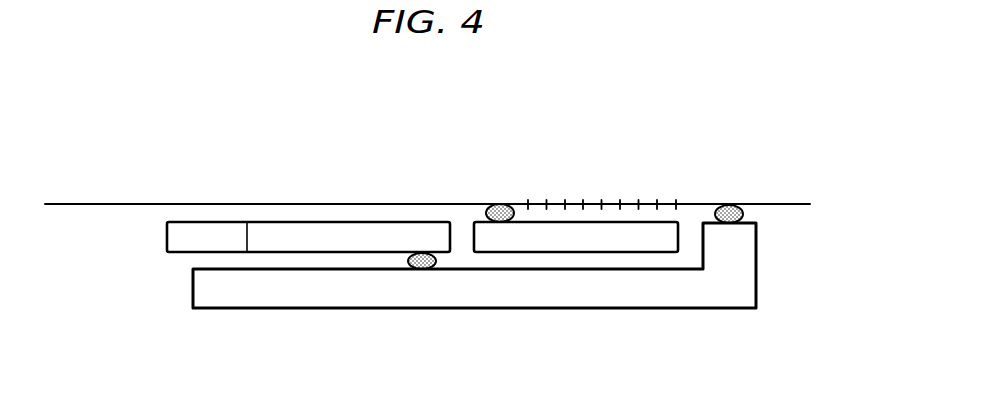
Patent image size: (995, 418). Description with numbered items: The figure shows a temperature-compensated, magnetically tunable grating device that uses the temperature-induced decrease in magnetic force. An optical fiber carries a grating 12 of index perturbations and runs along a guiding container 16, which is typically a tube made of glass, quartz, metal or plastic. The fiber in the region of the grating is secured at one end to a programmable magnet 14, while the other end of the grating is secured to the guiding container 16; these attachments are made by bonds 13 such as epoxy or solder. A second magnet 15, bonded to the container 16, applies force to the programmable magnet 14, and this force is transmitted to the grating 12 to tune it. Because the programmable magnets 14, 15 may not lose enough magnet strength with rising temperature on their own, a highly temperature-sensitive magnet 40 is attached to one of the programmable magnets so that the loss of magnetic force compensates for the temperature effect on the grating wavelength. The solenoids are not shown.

The grating 12 is at (637, 204).
The bonds 13 is at (745, 211).
The programmable magnet 14 is at (523, 222).
The second magnet 15 is at (436, 222).
The guiding container 16 is at (756, 273).
The temperature-sensitive magnet 40 is at (198, 222).